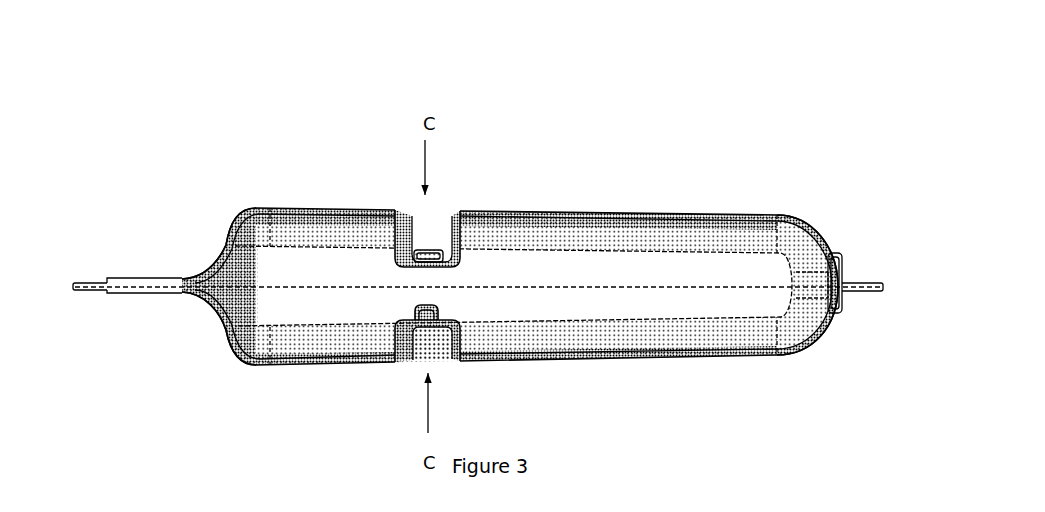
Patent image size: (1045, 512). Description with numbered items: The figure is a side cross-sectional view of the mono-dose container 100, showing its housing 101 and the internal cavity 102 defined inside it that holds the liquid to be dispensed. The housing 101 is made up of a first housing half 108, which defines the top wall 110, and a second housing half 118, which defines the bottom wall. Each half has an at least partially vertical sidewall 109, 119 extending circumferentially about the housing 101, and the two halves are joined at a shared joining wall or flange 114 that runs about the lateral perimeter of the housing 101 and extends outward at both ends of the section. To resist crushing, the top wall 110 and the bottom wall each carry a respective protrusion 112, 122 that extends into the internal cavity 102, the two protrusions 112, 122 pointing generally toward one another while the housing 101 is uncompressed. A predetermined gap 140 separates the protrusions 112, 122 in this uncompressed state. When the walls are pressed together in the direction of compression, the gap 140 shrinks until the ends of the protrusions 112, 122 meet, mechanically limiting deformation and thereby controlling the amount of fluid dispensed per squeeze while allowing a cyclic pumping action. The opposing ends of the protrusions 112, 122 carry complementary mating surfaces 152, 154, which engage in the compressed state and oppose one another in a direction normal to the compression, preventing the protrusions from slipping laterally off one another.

The container 100 is at (488, 236).
The housing 101 is at (574, 210).
The top wall 110 is at (510, 237).
The internal cavity 102 is at (584, 281).
The first housing half 108 is at (820, 232).
The sidewall 109 is at (222, 243).
The protrusion 112 is at (386, 210).
The flange 114 is at (90, 285).
The second housing half 118 is at (820, 342).
The sidewall 119 is at (227, 323).
The protrusion 122 is at (395, 335).
The gap 140 is at (435, 298).
The mating surface 152 is at (445, 260).
The mating surface 154 is at (425, 313).